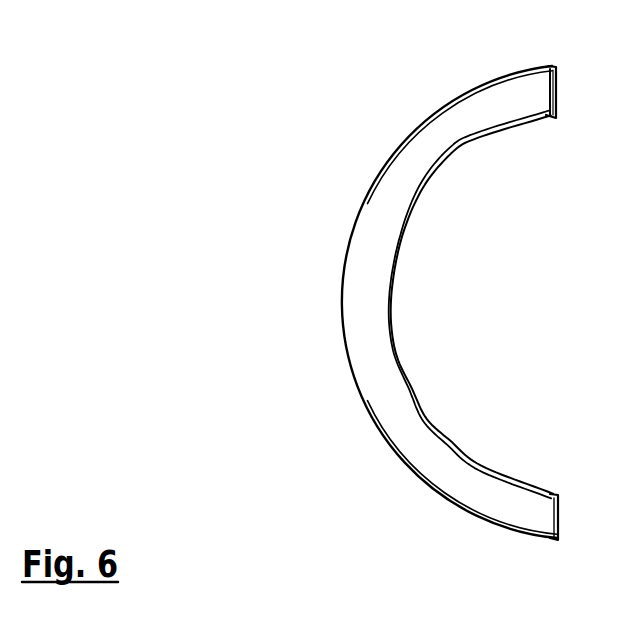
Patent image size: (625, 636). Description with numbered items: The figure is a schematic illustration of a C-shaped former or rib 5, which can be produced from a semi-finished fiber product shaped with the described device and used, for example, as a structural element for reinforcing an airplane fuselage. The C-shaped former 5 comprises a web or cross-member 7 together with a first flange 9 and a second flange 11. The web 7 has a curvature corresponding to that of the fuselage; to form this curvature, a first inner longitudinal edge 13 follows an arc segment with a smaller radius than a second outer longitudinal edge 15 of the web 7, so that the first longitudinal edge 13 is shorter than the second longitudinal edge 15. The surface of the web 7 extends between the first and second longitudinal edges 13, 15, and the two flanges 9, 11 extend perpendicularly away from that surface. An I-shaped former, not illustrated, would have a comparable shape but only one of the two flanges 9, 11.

The C-shaped former 5 is at (355, 316).
The web 7 is at (441, 316).
The first flange 9 is at (512, 126).
The second flange 11 is at (478, 88).
The first inner longitudinal edge 13 is at (463, 150).
The second outer longitudinal edge 15 is at (437, 112).